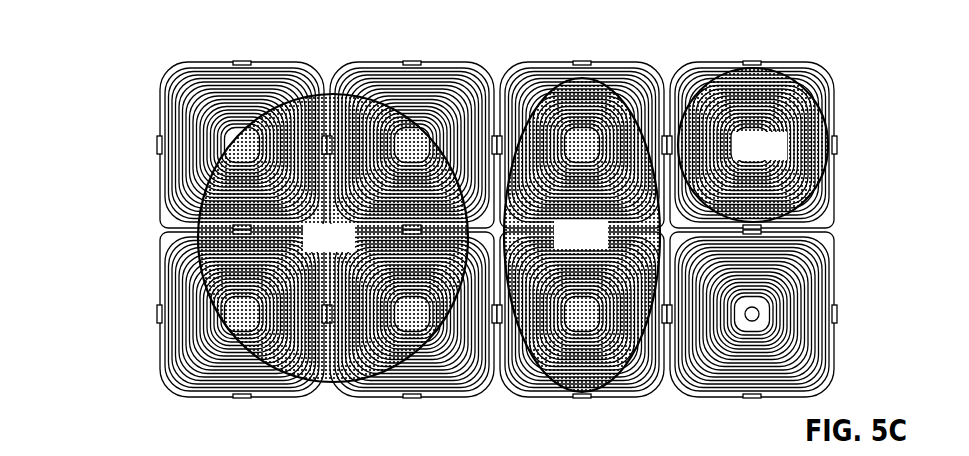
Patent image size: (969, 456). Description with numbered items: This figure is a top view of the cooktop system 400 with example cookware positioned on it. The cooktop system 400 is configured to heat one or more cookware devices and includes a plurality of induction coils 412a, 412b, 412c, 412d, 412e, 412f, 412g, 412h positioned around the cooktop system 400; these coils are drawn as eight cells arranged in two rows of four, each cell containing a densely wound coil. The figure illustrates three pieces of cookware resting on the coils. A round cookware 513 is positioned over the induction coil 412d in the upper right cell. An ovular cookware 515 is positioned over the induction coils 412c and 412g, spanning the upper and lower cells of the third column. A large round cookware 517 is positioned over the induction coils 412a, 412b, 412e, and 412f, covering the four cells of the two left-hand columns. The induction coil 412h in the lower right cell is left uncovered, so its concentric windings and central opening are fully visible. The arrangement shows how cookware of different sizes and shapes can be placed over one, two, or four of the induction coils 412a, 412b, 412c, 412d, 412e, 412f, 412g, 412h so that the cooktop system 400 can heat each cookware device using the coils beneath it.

The cooktop system 400 is at (106, 41).
The induction coil 412a is at (247, 82).
The induction coil 412b is at (417, 82).
The induction coil 412c is at (593, 95).
The induction coil 412d is at (752, 82).
The induction coil 412e is at (240, 358).
The induction coil 412f is at (442, 358).
The induction coil 412g is at (633, 390).
The induction coil 412h is at (800, 390).
The round cookware 513 is at (783, 157).
The ovular cookware 515 is at (604, 246).
The large round cookware 517 is at (352, 249).